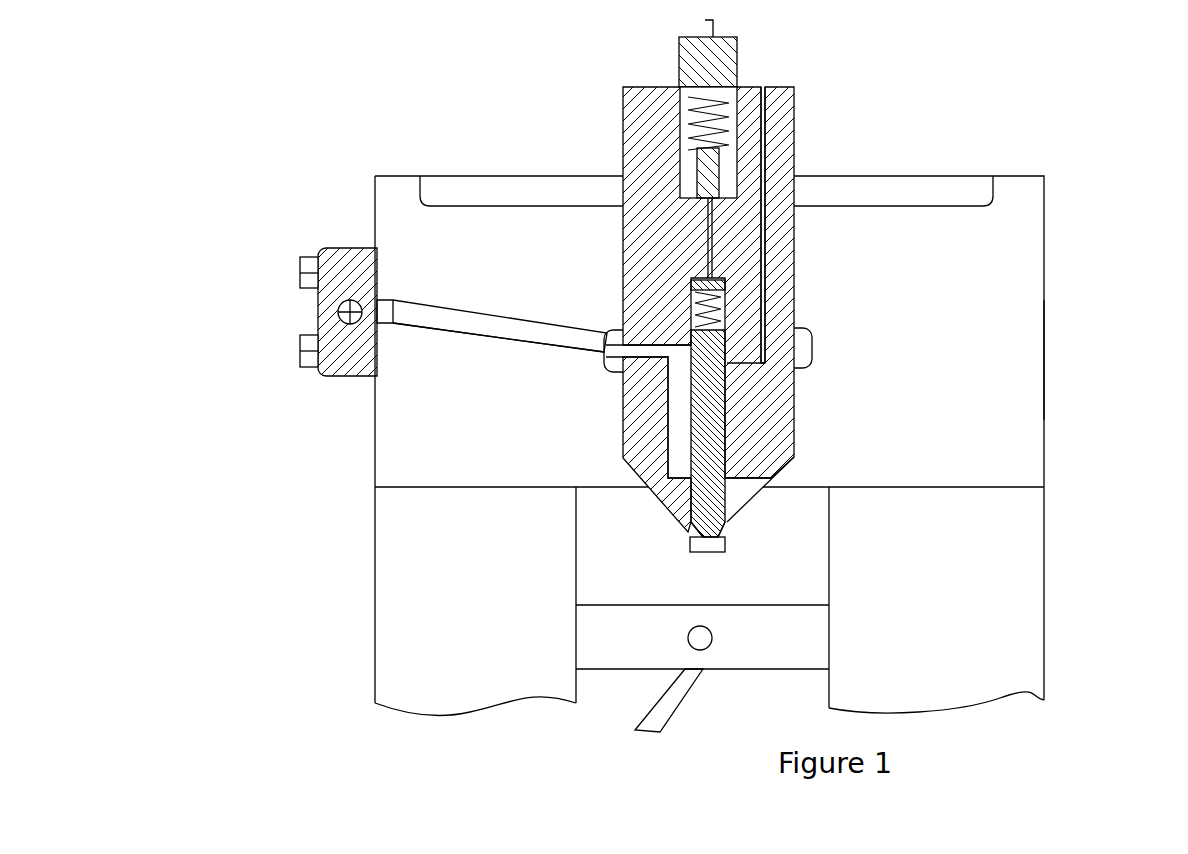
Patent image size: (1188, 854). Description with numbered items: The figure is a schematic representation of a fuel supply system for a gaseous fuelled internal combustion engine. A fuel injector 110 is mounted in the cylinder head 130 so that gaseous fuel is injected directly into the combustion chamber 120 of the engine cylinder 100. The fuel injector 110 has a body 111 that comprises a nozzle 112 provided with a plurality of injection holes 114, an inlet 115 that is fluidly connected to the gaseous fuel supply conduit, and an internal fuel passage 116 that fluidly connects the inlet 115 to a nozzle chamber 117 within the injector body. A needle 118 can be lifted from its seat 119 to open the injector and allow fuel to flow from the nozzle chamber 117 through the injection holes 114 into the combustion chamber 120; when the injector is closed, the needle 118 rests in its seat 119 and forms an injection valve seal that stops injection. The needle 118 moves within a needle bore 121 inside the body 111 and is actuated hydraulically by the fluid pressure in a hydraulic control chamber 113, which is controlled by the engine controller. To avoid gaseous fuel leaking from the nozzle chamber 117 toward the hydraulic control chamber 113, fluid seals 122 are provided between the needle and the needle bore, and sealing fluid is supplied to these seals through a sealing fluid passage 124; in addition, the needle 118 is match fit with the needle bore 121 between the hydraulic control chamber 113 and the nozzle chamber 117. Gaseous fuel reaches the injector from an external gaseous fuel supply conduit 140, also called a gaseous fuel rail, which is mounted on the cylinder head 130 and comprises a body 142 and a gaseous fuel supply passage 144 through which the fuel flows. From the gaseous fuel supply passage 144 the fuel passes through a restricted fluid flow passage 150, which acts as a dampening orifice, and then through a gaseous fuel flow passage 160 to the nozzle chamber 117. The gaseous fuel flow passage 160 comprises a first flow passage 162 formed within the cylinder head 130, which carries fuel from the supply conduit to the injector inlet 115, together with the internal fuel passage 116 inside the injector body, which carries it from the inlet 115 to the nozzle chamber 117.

The engine cylinder 100 is at (368, 672).
The fuel injector 110 is at (800, 104).
The body 111 is at (780, 152).
The nozzle 112 is at (765, 503).
The hydraulic control chamber 113 is at (797, 283).
The injection holes 114 is at (690, 540).
The inlet 115 is at (603, 353).
The internal fuel passage 116 is at (660, 412).
The nozzle chamber 117 is at (683, 493).
The needle 118 is at (705, 385).
The seat 119 is at (730, 532).
The combustion chamber 120 is at (800, 565).
The needle bore 121 is at (735, 425).
The fluid seals 122 is at (794, 365).
The sealing fluid passage 124 is at (798, 240).
The cylinder head 130 is at (1005, 300).
The gaseous fuel supply conduit 140 is at (348, 236).
The body 142 is at (337, 254).
The gaseous fuel supply passage 144 is at (338, 312).
The restricted fluid flow passage 150 is at (318, 367).
The gaseous fuel flow passage 160 is at (459, 333).
The first flow passage 162 is at (543, 330).